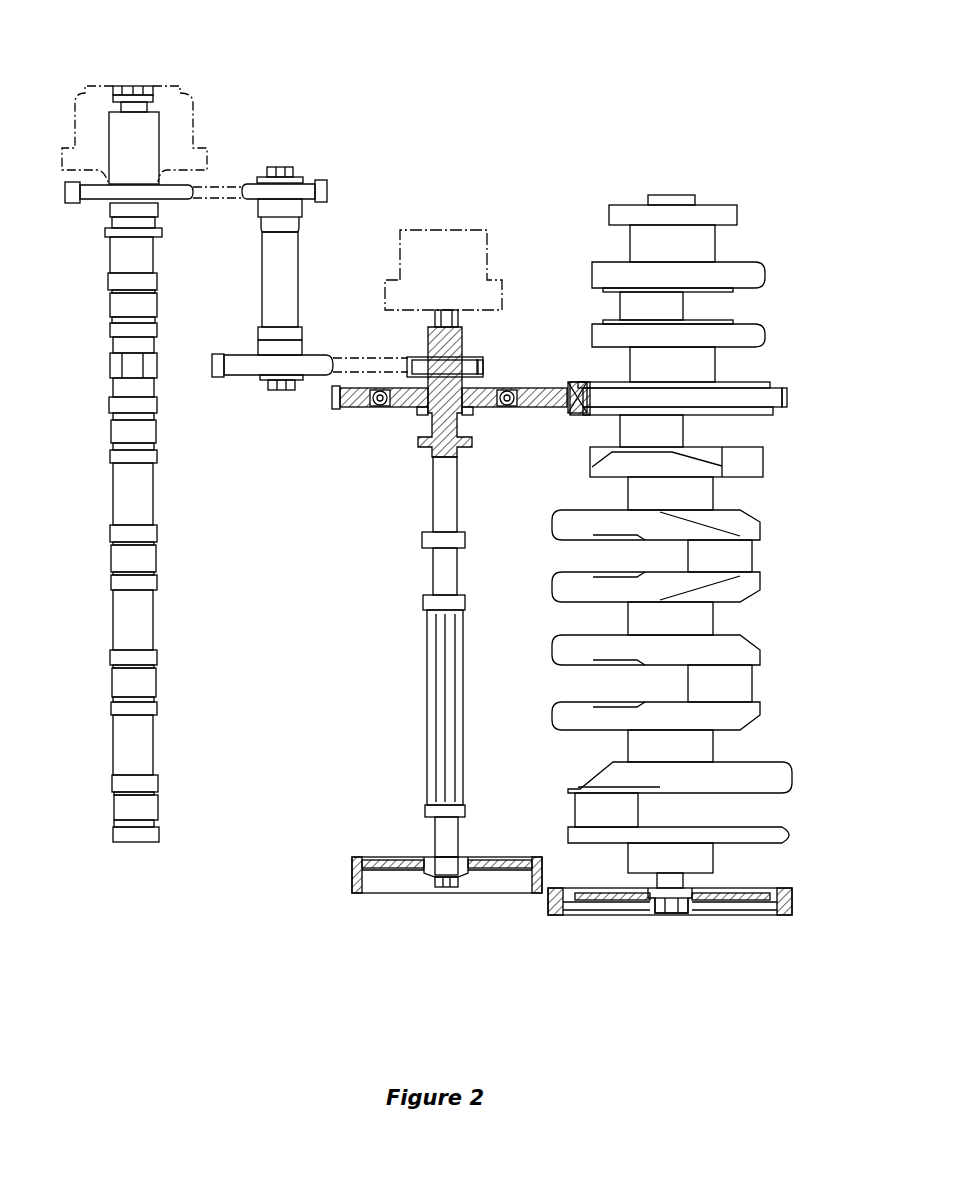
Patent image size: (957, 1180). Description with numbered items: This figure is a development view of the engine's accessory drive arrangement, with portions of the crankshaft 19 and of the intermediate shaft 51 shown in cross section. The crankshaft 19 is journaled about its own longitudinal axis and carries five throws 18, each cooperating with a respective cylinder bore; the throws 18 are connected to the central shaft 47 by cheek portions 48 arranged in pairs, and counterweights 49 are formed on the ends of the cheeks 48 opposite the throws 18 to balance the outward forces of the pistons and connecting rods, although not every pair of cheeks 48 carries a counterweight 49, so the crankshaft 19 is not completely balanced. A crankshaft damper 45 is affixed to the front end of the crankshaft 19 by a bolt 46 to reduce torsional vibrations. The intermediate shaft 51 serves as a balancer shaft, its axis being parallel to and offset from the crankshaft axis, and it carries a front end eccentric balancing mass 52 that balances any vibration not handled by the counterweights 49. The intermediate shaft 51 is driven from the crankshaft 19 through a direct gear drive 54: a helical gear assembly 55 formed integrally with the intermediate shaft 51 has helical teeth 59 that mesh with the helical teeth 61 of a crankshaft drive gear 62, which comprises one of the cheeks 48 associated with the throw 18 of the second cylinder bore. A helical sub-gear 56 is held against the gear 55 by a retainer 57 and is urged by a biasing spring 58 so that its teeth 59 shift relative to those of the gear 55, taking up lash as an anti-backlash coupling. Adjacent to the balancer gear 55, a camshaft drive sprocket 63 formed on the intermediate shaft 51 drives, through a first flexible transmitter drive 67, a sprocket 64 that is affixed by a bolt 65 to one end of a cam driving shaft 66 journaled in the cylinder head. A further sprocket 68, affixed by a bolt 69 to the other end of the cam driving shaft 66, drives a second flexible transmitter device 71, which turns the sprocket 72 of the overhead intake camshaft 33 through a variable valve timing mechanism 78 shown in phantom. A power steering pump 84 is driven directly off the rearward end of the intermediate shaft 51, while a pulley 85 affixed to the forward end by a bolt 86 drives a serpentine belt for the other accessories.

The throws 18 is at (684, 306).
The crankshaft 19 is at (672, 541).
The intake camshaft 33 is at (110, 490).
The crankshaft damper 45 is at (620, 914).
The bolt 46 is at (690, 914).
The central shaft 47 is at (716, 246).
The cheek portions 48 is at (592, 270).
The counterweights 49 is at (765, 270).
The intermediate shaft 51 is at (427, 572).
The eccentric balancing mass 52 is at (432, 698).
The direct gear drive 54 is at (372, 432).
The helical gear assembly 55 is at (537, 382).
The helical sub-gear 56 is at (469, 430).
The retainer 57 is at (415, 425).
The biasing spring 58 is at (512, 410).
The teeth 59 is at (335, 396).
The helical teeth 61 is at (789, 404).
The crankshaft drive gear 62 is at (795, 385).
The camshaft drive sprocket 63 is at (484, 366).
The sprocket 64 is at (214, 360).
The bolt 65 is at (282, 392).
The cam driving shaft 66 is at (305, 268).
The first flexible transmitter drive 67 is at (388, 347).
The sprocket 68 is at (327, 188).
The bolt 69 is at (280, 170).
The second flexible transmitter device 71 is at (228, 182).
The sprocket 72 is at (66, 196).
The variable valve timing mechanism 78 is at (104, 76).
The power steering pump 84 is at (408, 226).
The pulley 85 is at (380, 855).
The bolt 86 is at (432, 887).